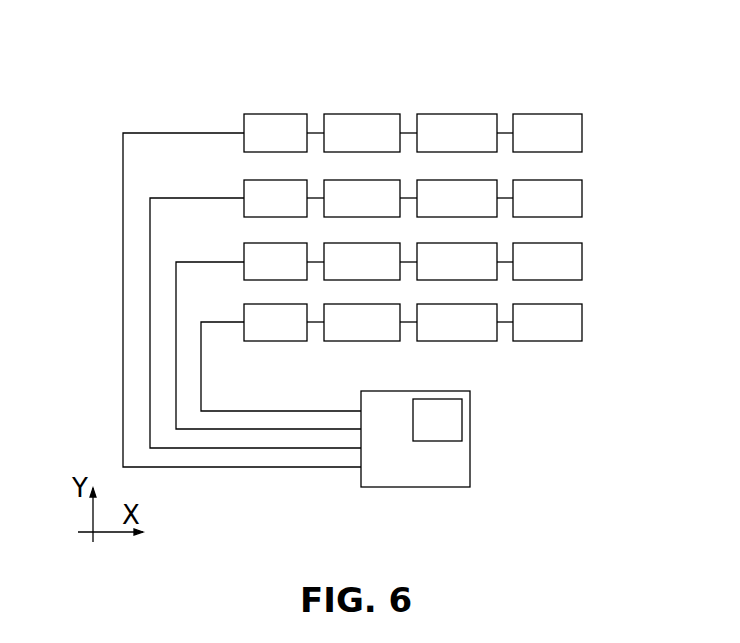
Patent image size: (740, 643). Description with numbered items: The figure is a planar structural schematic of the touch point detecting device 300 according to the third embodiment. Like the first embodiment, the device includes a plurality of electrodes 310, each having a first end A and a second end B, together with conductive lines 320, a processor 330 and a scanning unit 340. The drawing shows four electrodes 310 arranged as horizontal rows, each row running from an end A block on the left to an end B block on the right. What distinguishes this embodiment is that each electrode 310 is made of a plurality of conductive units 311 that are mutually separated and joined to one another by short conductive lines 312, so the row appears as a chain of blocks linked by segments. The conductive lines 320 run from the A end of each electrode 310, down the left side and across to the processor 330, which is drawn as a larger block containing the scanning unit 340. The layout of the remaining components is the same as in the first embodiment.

The touch point detecting device 300 is at (252, 97).
The electrode 310 is at (581, 114).
The conductive unit 311 is at (487, 122).
The conductive line 312 is at (407, 133).
The conductive lines 320 is at (123, 223).
The processor 330 is at (415, 439).
The scanning unit 340 is at (452, 427).